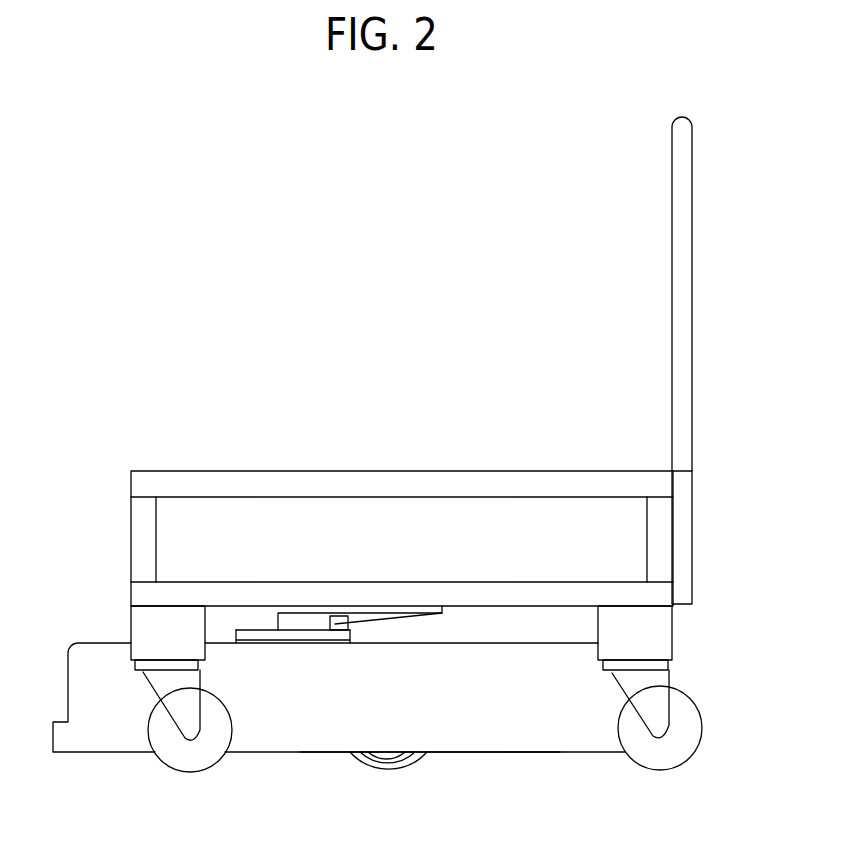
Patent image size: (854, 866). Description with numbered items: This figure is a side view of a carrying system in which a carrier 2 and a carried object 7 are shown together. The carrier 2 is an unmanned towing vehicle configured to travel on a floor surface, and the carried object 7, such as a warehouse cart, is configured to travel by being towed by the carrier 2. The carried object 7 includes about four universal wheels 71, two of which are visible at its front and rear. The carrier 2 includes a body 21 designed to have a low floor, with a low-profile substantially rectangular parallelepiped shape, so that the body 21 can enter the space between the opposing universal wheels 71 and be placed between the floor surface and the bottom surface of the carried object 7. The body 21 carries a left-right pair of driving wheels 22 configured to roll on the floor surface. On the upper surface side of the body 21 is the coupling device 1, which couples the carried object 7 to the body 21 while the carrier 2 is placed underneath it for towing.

The coupling device 1 is at (352, 632).
The carrier 2 is at (93, 642).
The carried object 7 is at (131, 520).
The body 21 is at (553, 743).
The driving wheels 22 is at (397, 768).
The universal wheels 71 is at (180, 760).